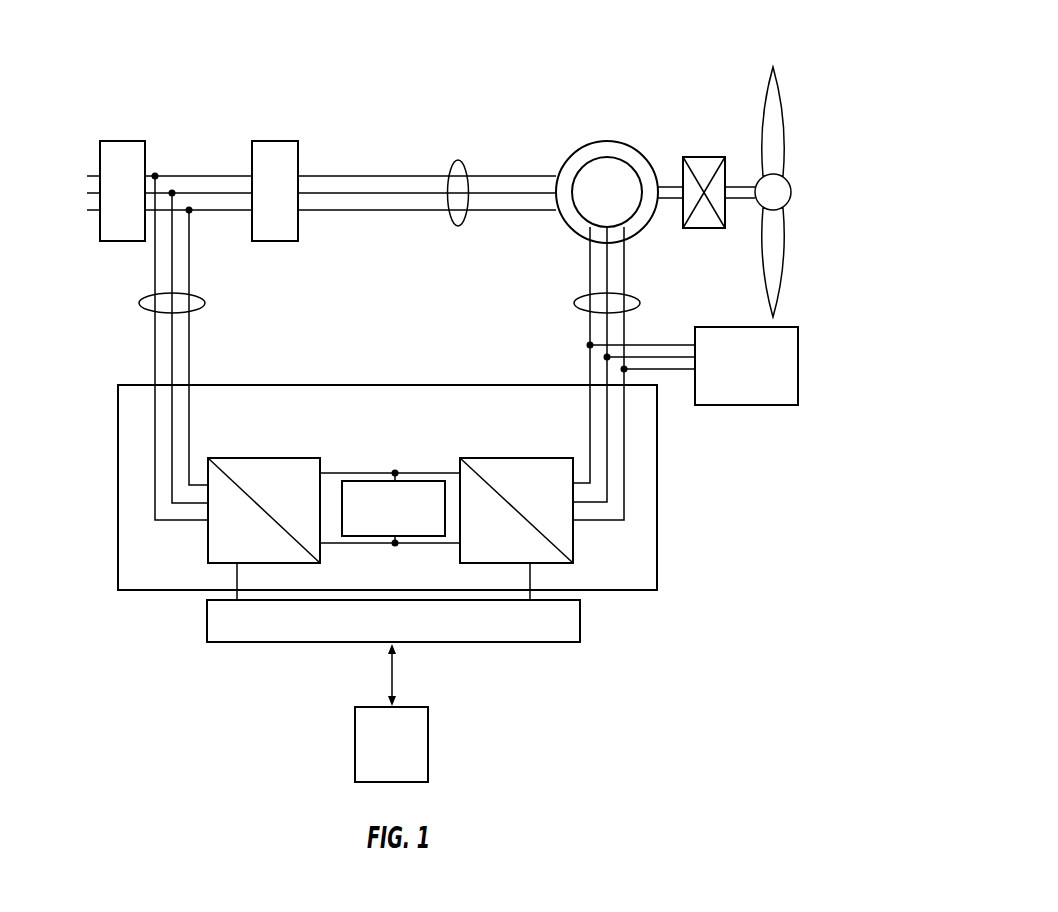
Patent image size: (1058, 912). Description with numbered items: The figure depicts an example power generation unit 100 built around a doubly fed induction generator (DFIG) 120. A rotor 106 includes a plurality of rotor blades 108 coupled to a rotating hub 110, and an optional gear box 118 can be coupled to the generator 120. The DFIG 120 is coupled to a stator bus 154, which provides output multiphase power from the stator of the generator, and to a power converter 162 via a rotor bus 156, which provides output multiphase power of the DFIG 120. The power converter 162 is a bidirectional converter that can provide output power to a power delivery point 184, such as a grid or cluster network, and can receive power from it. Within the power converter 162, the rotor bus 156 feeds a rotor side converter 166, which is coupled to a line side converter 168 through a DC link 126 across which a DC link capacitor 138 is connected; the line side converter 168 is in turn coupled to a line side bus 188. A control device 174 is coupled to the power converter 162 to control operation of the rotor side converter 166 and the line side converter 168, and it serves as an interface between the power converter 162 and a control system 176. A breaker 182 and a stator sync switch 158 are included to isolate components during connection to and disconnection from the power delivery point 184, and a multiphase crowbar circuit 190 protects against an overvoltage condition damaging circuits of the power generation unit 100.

The power generation unit 100 is at (661, 48).
The rotor 106 is at (822, 94).
The rotor blades 108 is at (784, 128).
The rotating hub 110 is at (792, 191).
The gear box 118 is at (705, 156).
The generator 120 is at (613, 143).
The DC link 126 is at (356, 471).
The DC link capacitor 138 is at (427, 480).
The stator bus 154 is at (460, 160).
The rotor bus 156 is at (574, 305).
The stator sync switch 158 is at (275, 141).
The power converter 162 is at (657, 467).
The rotor side converter 166 is at (493, 457).
The line side converter 168 is at (265, 457).
The control device 174 is at (530, 643).
The control system 176 is at (428, 747).
The breaker 182 is at (117, 141).
The power delivery point 184 is at (77, 180).
The line side bus 188 is at (205, 305).
The multiphase crowbar circuit 190 is at (799, 363).